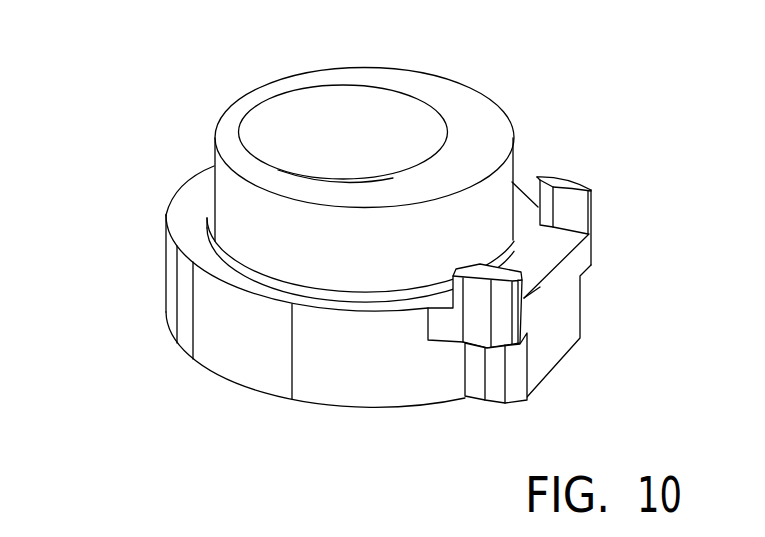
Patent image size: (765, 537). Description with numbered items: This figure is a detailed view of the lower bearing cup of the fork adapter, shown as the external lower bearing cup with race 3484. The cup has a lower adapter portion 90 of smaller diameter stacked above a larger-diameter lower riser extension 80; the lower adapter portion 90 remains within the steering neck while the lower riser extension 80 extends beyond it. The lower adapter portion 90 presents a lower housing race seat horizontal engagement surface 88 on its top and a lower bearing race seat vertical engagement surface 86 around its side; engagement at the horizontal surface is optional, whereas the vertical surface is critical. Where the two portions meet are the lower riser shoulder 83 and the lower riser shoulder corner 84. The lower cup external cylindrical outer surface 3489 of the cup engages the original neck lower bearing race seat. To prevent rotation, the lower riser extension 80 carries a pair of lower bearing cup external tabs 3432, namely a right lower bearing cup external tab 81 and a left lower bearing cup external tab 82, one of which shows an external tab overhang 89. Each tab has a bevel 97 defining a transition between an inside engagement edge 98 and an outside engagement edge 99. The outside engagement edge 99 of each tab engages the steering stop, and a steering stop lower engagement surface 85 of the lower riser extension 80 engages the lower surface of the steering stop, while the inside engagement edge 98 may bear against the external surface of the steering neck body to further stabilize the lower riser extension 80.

The lower riser extension 80 is at (367, 375).
The right lower bearing cup external tab 81 is at (525, 300).
The left lower bearing cup external tab 82 is at (592, 243).
The lower riser shoulder 83 is at (210, 262).
The lower riser shoulder corner 84 is at (210, 216).
The steering stop lower engagement surface 85 is at (543, 258).
The lower bearing race seat vertical engagement surface 86 is at (507, 181).
The lower housing race seat horizontal engagement surface 88 is at (427, 97).
The external tab overhang 89 is at (497, 368).
The lower adapter portion 90 is at (224, 175).
The bevel 97 is at (547, 180).
The inside engagement edge 98 is at (535, 208).
The outside engagement edge 99 is at (598, 217).
The lower bearing cup external tabs 3432 is at (597, 190).
The external lower bearing cup with race 3484 is at (221, 188).
The lower cup external cylindrical outer surface 3489 is at (268, 243).